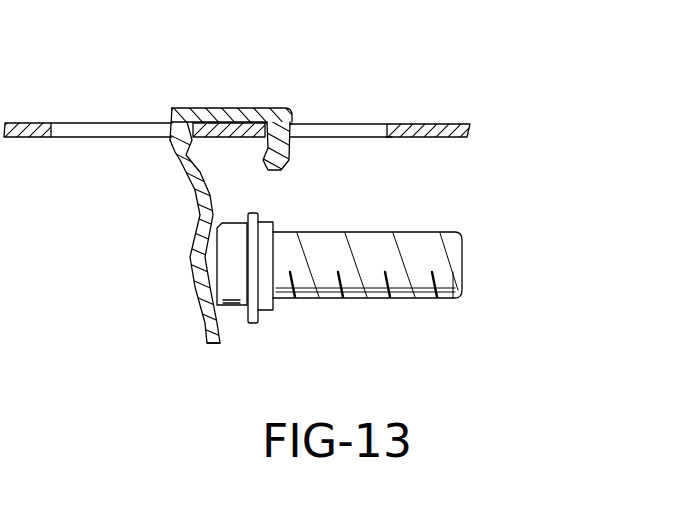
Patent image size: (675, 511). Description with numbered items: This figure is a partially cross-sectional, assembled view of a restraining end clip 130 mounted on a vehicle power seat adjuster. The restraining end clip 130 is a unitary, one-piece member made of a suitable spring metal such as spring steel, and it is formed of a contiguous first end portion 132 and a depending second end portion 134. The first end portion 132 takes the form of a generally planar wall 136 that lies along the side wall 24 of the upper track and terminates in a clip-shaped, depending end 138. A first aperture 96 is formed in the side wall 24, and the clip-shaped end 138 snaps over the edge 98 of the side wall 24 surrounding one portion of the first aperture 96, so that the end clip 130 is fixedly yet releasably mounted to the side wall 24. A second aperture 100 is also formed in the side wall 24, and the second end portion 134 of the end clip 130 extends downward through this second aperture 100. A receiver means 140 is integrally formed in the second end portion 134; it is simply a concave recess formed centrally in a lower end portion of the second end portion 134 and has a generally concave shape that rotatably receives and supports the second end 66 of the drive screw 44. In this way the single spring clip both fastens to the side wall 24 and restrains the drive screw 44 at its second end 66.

The side wall 24 is at (427, 122).
The drive screw 44 is at (395, 298).
The second end 66 is at (243, 304).
The first aperture 96 is at (386, 138).
The edge 98 is at (289, 126).
The second aperture 100 is at (63, 122).
The restraining end clip 130 is at (225, 193).
The first end portion 132 is at (192, 102).
The second end portion 134 is at (188, 240).
The planar wall 136 is at (243, 106).
The clip-shaped end 138 is at (273, 165).
The receiver means 140 is at (201, 302).